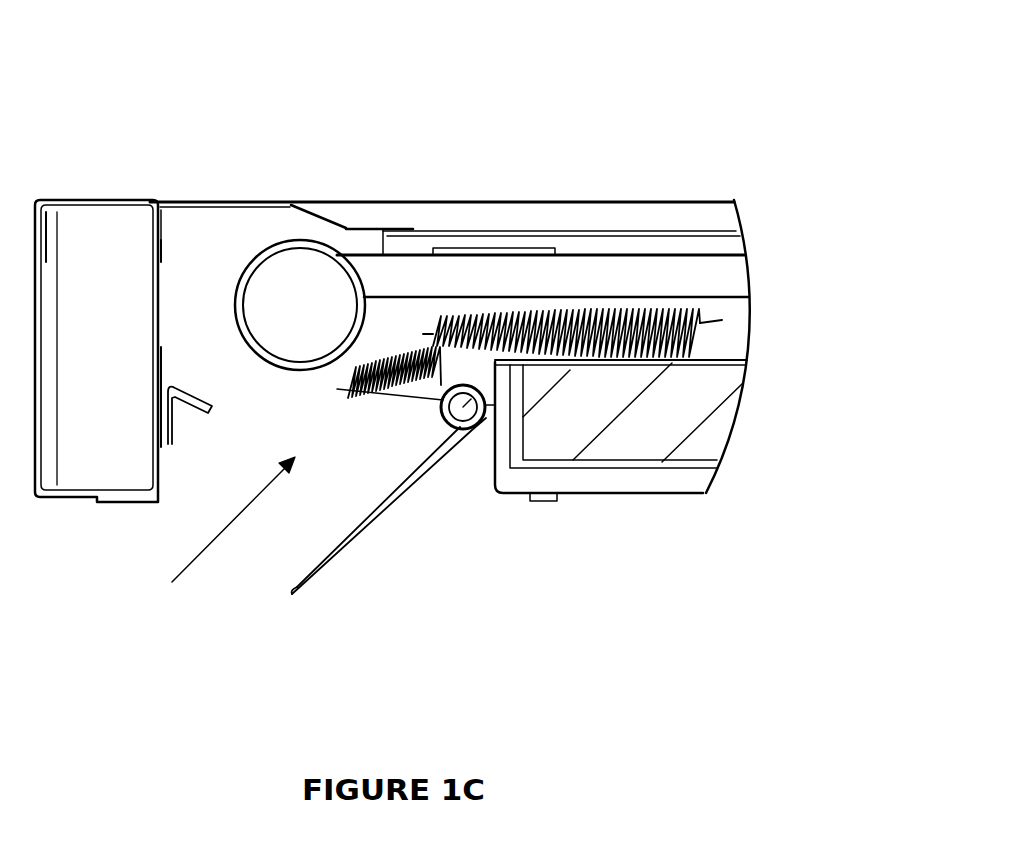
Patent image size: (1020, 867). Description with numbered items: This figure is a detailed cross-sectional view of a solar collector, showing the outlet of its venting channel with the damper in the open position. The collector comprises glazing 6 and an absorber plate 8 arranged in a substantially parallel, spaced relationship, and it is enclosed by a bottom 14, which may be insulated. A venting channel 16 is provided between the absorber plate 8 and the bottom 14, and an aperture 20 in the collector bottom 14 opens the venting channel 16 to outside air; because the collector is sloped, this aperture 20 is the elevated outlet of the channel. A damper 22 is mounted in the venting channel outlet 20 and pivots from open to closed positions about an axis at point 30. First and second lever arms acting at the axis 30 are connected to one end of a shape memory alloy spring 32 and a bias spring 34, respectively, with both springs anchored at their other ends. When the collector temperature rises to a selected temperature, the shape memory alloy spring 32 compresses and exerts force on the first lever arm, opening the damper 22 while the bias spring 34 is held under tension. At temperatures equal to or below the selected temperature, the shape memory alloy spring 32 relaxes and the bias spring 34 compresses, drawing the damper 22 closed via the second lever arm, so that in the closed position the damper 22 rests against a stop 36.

The glazing 6 is at (397, 213).
The absorber plate 8 is at (643, 272).
The bottom 14 is at (662, 417).
The venting channel 16 is at (730, 340).
The aperture 20 is at (220, 538).
The damper 22 is at (348, 547).
The axis 30 is at (463, 413).
The shape memory alloy spring 32 is at (462, 317).
The bias spring 34 is at (393, 363).
The stop 36 is at (203, 408).